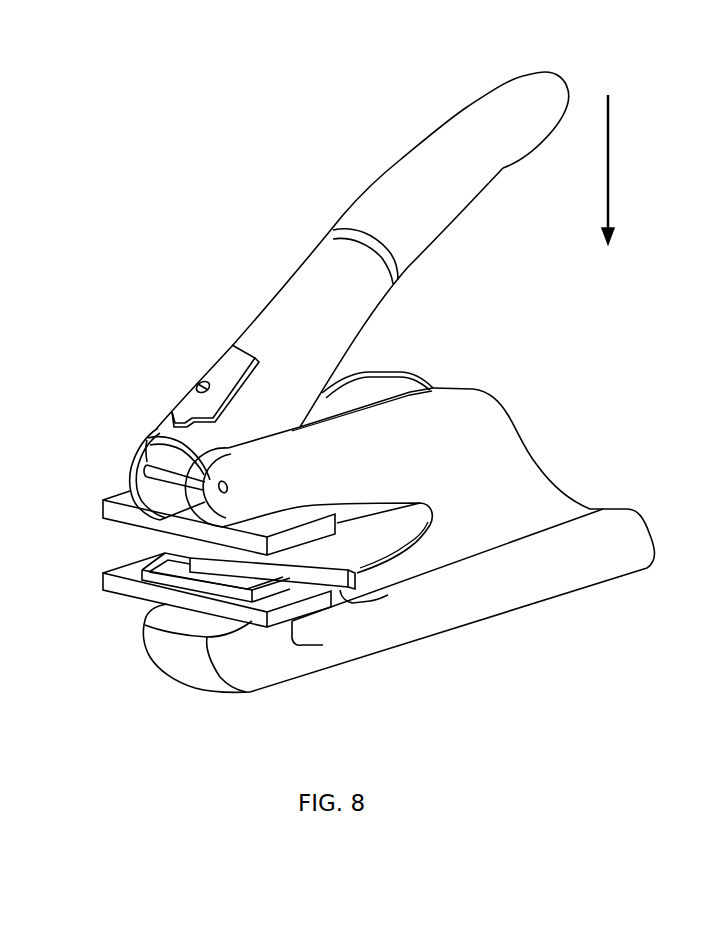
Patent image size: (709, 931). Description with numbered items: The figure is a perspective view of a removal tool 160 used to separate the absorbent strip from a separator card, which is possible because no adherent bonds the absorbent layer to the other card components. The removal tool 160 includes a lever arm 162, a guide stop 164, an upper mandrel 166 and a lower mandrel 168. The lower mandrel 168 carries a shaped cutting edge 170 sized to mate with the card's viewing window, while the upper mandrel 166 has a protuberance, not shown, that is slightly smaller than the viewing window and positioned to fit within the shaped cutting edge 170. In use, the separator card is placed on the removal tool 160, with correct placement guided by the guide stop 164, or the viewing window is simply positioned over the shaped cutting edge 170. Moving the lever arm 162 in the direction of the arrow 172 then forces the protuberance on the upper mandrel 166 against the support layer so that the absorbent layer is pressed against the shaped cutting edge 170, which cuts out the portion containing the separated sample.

The removal tool 160 is at (233, 176).
The lever arm 162 is at (500, 170).
The guide stop 164 is at (388, 595).
The upper mandrel 166 is at (103, 500).
The lower mandrel 168 is at (323, 645).
The shaped cutting edge 170 is at (146, 560).
The arrow 172 is at (608, 128).